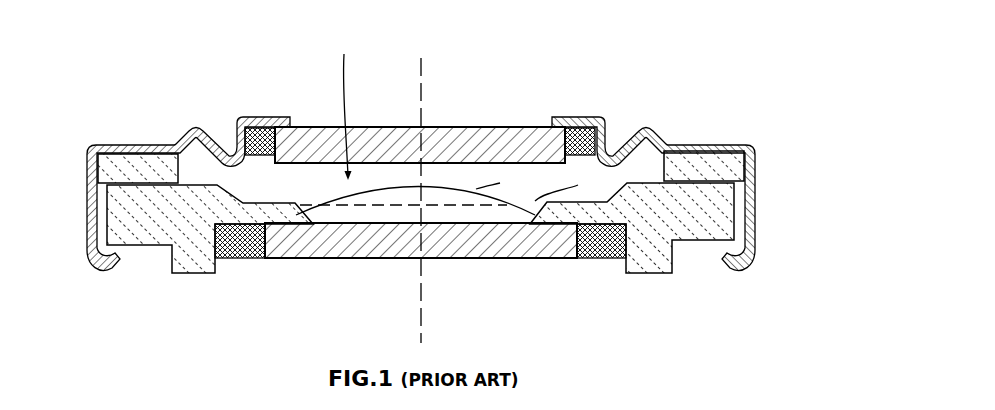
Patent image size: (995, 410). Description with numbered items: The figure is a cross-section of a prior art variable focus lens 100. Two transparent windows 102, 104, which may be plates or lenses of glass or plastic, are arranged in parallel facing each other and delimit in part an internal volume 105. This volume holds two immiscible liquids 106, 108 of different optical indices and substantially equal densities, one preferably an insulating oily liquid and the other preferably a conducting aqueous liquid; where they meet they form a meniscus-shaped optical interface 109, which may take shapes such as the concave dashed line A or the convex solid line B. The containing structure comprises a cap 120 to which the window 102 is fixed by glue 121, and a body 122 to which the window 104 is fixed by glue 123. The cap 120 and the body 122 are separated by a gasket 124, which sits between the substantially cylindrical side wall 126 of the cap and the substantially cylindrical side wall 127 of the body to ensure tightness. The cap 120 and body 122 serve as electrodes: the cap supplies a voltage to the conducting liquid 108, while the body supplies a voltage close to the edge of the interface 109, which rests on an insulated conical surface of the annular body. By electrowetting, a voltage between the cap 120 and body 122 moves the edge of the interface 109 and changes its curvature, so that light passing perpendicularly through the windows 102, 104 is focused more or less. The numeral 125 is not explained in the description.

The variable focus lens 100 is at (419, 183).
The transparent window 102 is at (498, 128).
The transparent window 104 is at (495, 246).
The internal volume 105 is at (342, 106).
The liquid 106 is at (353, 219).
The conducting liquid 108 is at (393, 180).
The optical interface 109 is at (328, 204).
The cap 120 is at (181, 131).
The glue 121 is at (258, 127).
The body 122 is at (640, 278).
The glue 123 is at (240, 259).
The gasket 124 is at (712, 162).
The cavity 125 is at (293, 224).
The side wall 126 is at (161, 159).
The side wall 127 is at (733, 215).